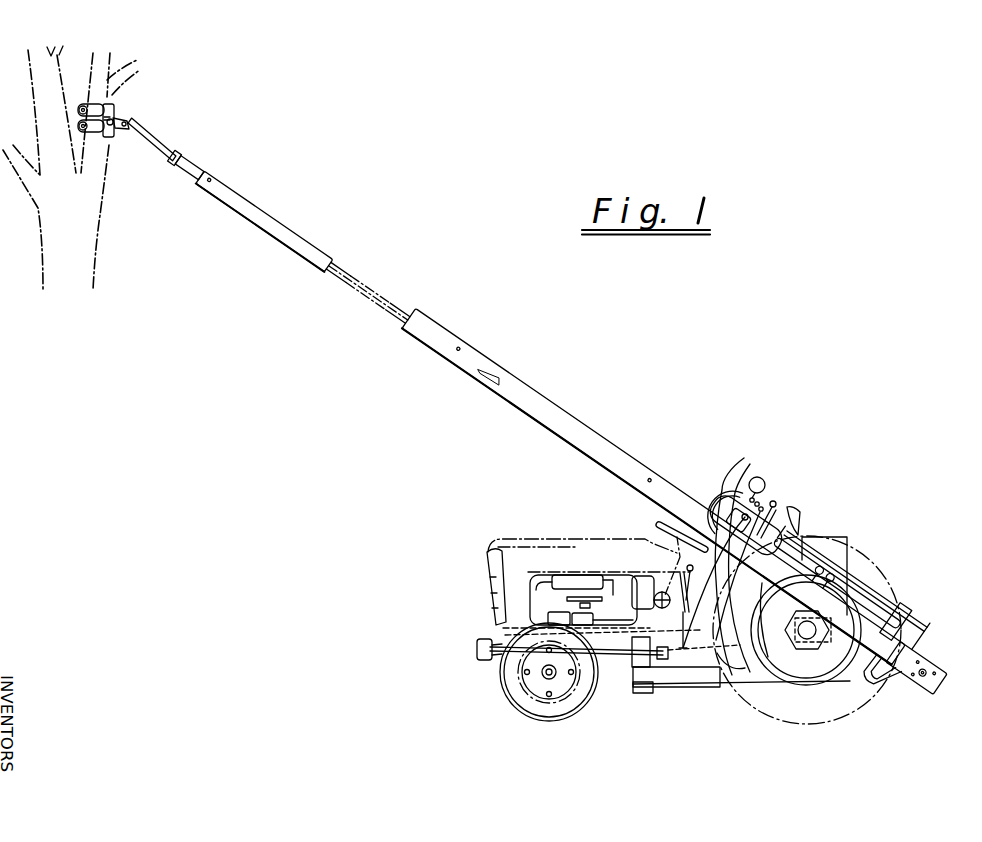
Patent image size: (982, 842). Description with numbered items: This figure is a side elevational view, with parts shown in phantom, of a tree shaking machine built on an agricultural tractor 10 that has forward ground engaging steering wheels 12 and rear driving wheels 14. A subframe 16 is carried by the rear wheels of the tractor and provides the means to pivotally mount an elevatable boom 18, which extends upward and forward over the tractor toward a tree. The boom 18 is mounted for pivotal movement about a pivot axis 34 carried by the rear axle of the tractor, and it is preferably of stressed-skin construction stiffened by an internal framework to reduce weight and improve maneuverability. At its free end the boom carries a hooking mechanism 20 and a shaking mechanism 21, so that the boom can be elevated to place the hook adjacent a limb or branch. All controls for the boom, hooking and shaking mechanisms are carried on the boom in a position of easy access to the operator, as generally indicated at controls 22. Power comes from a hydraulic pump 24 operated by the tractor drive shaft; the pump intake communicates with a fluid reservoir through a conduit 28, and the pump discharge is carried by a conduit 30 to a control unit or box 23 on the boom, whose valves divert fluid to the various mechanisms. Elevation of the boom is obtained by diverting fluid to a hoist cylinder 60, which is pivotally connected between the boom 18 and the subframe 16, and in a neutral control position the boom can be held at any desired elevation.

The agricultural tractor 10 is at (492, 545).
The forward ground engaging steering wheels 12 is at (530, 720).
The rear driving wheels 14 is at (855, 713).
The subframe 16 is at (685, 676).
The elevatable boom 18 is at (540, 402).
The hooking mechanism 20 is at (132, 116).
The shaking mechanism 21 is at (934, 660).
The controls 22 is at (766, 498).
The control unit or box 23 is at (745, 470).
The hydraulic pump 24 is at (480, 648).
The conduit 28 is at (704, 633).
The conduit 30 is at (502, 672).
The pivot axis 34 is at (857, 590).
The hoist cylinder 60 is at (735, 673).